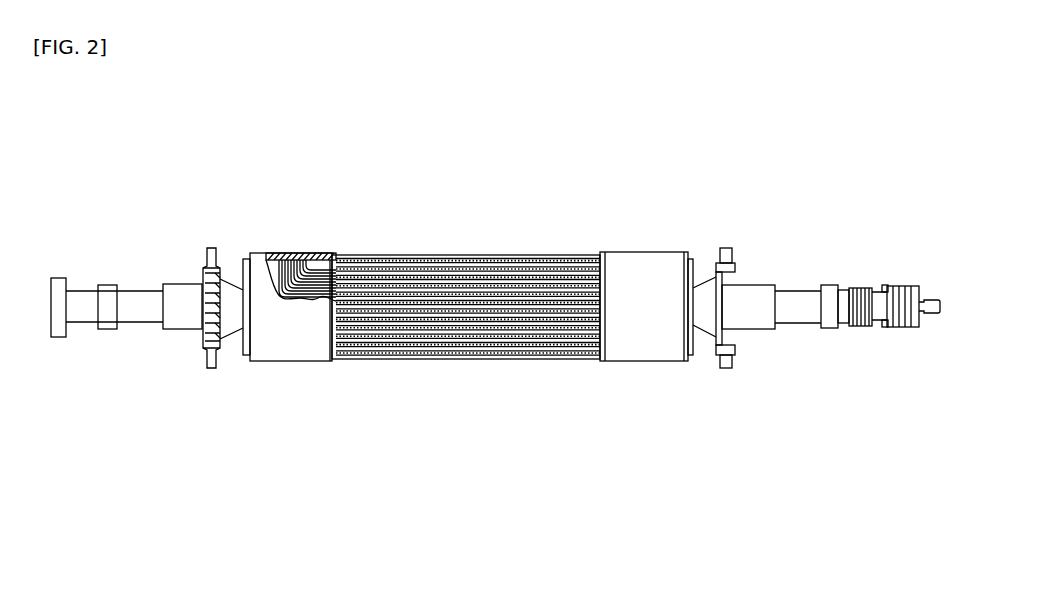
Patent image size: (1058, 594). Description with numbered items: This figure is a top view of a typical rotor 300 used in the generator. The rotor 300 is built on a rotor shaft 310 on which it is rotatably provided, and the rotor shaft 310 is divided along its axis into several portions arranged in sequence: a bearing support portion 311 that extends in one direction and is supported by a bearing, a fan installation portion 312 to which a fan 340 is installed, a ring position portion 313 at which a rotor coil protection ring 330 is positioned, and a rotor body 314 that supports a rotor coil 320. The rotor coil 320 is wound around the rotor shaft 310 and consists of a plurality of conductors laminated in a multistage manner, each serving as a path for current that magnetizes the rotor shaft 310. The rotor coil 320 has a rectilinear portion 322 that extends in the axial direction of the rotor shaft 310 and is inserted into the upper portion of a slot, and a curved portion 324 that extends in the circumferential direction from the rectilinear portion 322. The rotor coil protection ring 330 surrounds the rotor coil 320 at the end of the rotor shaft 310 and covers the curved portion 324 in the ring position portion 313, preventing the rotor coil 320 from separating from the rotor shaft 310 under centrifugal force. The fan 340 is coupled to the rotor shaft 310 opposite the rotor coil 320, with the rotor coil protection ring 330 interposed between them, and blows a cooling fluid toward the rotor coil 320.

The rotor 300 is at (810, 153).
The rotor shaft 310 is at (350, 480).
The bearing support portion 311 is at (147, 313).
The fan installation portion 312 is at (237, 320).
The ring position portion 313 is at (298, 332).
The rotor body 314 is at (365, 358).
The rotor coil 320 is at (400, 144).
The rectilinear portion 322 is at (395, 257).
The curved portion 324 is at (322, 253).
The rotor coil protection ring 330 is at (257, 252).
The fan 340 is at (212, 247).